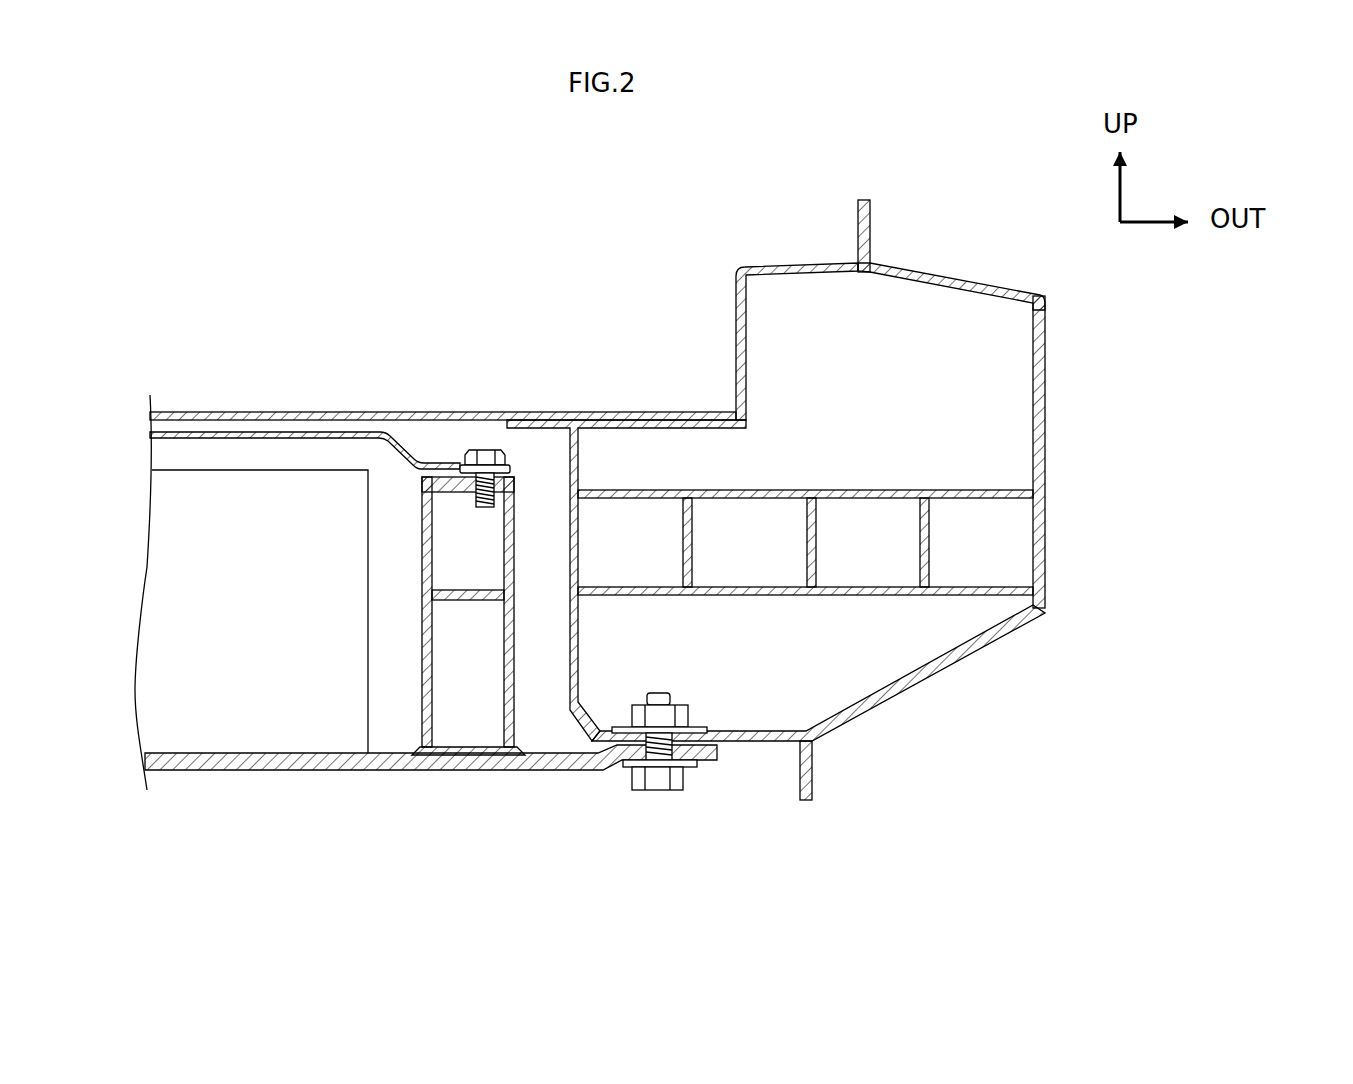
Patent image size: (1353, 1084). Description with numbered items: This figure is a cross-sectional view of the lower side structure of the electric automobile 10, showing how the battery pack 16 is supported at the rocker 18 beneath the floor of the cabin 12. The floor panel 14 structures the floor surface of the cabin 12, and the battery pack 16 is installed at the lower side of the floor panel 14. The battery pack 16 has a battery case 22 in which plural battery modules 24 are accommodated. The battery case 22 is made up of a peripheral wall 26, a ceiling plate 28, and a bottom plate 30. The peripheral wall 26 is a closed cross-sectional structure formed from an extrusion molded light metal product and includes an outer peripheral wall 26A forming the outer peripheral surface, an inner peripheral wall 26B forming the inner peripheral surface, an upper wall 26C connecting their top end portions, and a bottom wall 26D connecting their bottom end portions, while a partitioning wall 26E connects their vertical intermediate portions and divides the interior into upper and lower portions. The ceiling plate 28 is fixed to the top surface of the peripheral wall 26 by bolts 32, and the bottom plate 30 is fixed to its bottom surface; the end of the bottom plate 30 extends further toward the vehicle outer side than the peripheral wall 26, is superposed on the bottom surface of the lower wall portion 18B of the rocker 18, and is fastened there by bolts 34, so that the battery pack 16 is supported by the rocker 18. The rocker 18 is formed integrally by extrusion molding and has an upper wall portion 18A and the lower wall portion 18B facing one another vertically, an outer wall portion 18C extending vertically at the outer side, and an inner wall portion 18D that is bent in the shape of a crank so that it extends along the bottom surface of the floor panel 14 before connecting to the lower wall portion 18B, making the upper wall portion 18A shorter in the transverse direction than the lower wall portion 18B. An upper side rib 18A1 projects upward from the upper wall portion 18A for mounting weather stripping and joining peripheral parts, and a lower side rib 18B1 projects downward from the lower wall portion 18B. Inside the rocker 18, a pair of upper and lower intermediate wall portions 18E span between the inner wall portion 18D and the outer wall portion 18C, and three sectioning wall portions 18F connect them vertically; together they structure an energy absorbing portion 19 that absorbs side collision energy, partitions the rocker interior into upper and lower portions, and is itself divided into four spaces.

The electric automobile 10 is at (418, 222).
The cabin 12 is at (363, 274).
The floor panel 14 is at (462, 412).
The battery pack 16 is at (348, 802).
The rocker 18 is at (937, 700).
The upper wall portion 18A is at (922, 270).
The upper side rib 18A1 is at (857, 228).
The lower wall portion 18B is at (862, 708).
The lower side rib 18B1 is at (795, 777).
The outer wall portion 18C is at (1047, 390).
The inner wall portion 18D is at (580, 462).
The intermediate wall portions 18E is at (880, 490).
The sectioning wall portions 18F is at (675, 557).
The energy absorbing portion 19 is at (842, 467).
The battery case 22 is at (182, 773).
The battery modules 24 is at (200, 482).
The peripheral wall 26 is at (518, 712).
The outer peripheral wall 26A is at (515, 520).
The inner peripheral wall 26B is at (422, 545).
The upper wall 26C is at (436, 463).
The bottom wall 26D is at (467, 757).
The partitioning wall 26E is at (463, 600).
The ceiling plate 28 is at (273, 432).
The bottom plate 30 is at (260, 770).
The bolts 32 is at (482, 450).
The bolts 34 is at (658, 790).